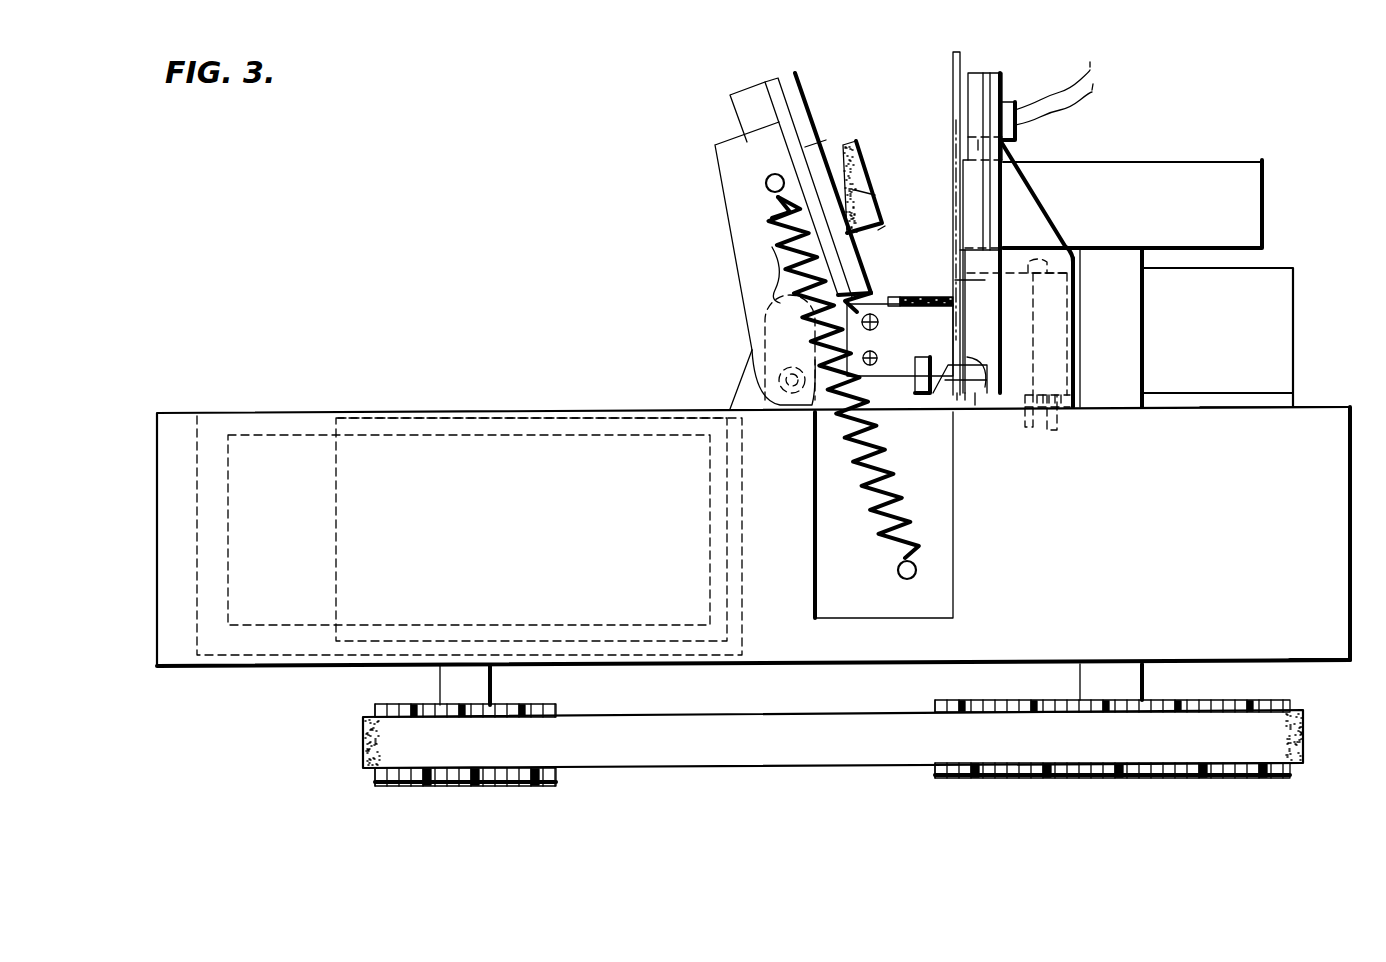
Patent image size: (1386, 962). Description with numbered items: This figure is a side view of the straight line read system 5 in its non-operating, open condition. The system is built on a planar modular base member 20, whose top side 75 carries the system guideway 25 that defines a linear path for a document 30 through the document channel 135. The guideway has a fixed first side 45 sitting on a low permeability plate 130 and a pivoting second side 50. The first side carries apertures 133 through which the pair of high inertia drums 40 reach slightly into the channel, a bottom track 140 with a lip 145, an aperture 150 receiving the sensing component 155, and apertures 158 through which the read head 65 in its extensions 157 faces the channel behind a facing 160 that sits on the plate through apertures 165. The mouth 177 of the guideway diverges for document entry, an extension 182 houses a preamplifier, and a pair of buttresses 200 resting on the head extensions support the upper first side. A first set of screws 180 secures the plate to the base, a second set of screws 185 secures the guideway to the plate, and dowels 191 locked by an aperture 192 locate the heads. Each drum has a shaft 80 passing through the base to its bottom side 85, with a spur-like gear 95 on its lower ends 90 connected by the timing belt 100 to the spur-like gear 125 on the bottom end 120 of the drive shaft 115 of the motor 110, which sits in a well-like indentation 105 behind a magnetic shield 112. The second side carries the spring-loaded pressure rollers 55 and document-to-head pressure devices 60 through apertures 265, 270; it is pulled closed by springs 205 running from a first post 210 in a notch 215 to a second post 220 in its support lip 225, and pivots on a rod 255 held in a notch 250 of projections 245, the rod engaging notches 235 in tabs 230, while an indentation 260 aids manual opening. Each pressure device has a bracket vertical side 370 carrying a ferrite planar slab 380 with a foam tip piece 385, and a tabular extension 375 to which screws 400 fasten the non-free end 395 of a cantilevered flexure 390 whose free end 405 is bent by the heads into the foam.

The straight line read system 5 is at (1327, 367).
The base member 20 is at (771, 536).
The system guideway 25 is at (820, 63).
The document 30 is at (953, 66).
The high inertia drums 40 is at (1175, 227).
The first side 45 is at (1003, 95).
The second side 50 is at (775, 111).
The spring-loaded pressure rollers 55 is at (855, 143).
The document-to-head pressure devices 60 is at (900, 174).
The read head 65 is at (1045, 336).
The top side 75 is at (1328, 407).
The shaft 80 is at (1143, 682).
The bottom side 85 is at (1297, 664).
The lower ends 90 is at (1080, 698).
The spur-like gear 95 is at (1168, 779).
The timing belt 100 is at (1305, 740).
The well-like indentation 105 is at (197, 474).
The motor 110 is at (300, 525).
The magnetic shield 112 is at (336, 418).
The drive shaft 115 is at (492, 690).
The bottom end 120 is at (440, 700).
The spur-like gear 125 is at (520, 787).
The plate 130 is at (1302, 406).
The apertures 133 is at (978, 147).
The document channel 135 is at (975, 405).
The bottom track 140 is at (948, 405).
The lip 145 is at (928, 400).
The aperture 150 is at (975, 94).
The sensing component 155 is at (1016, 134).
The extensions 157 is at (1075, 305).
The apertures 158 is at (965, 245).
The facing 160 is at (960, 283).
The apertures 165 is at (965, 400).
The mouth 177 is at (1004, 73).
The first set of screws 180 is at (957, 402).
The extension 182 is at (1293, 312).
The second set of screws 185 is at (1045, 370).
The dowels 191 is at (1058, 427).
The aperture 192 is at (1052, 430).
The buttresses 200 is at (1050, 216).
The springs 205 is at (775, 220).
The first post 210 is at (898, 570).
The notch 215 is at (910, 618).
The second post 220 is at (766, 186).
The support lip 225 is at (715, 155).
The tabs 230 is at (750, 306).
The notches 235 is at (752, 352).
The projections 245 is at (735, 384).
The notch 250 is at (778, 298).
The rod 255 is at (794, 394).
The indentation 260 is at (788, 78).
The apertures 265 is at (820, 122).
The apertures 270 is at (860, 194).
The vertical side 370 is at (880, 230).
The tabular extension 375 is at (868, 290).
The planar slab 380 is at (895, 297).
The tip piece 385 is at (945, 307).
The cantilevered flexure 390 is at (905, 368).
The non-free end 395 is at (873, 424).
The screws 400 is at (822, 332).
The free end 405 is at (960, 322).